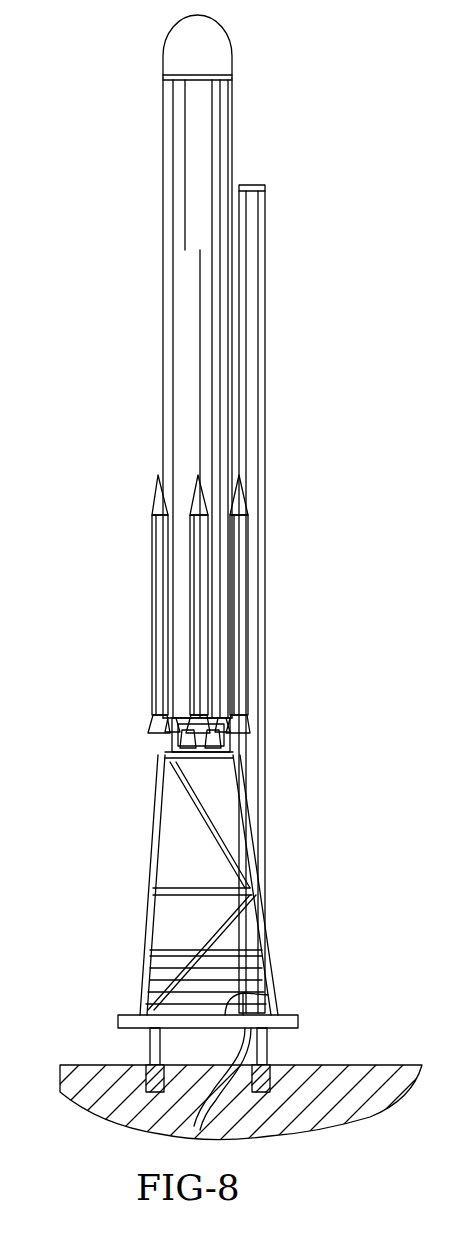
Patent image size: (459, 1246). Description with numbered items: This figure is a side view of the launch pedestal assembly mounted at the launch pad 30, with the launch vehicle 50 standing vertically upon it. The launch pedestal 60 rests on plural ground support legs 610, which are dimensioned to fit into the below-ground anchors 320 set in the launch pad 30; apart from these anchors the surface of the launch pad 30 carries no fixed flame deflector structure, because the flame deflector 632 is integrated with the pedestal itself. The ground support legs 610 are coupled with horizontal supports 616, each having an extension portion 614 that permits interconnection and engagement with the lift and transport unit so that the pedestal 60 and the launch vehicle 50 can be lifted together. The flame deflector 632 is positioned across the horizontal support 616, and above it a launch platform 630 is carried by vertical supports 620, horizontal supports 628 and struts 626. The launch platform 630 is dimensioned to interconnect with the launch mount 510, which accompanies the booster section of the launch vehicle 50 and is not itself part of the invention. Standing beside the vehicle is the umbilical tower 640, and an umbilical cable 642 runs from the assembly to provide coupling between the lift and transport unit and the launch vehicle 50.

The launch vehicle 50 is at (230, 122).
The umbilical tower 640 is at (262, 386).
The launch mount 510 is at (248, 742).
The launch platform 630 is at (232, 768).
The launch pedestal 60 is at (146, 788).
The vertical supports 620 is at (152, 872).
The struts 626 is at (190, 824).
The horizontal supports 628 is at (215, 892).
The flame deflector 632 is at (165, 975).
The horizontal supports 616 is at (272, 1000).
The extension portion 614 is at (134, 1018).
The ground support legs 610 is at (150, 1036).
The launch pad 30 is at (356, 1045).
The below-ground anchors 320 is at (146, 1080).
The umbilical cable 642 is at (198, 1130).